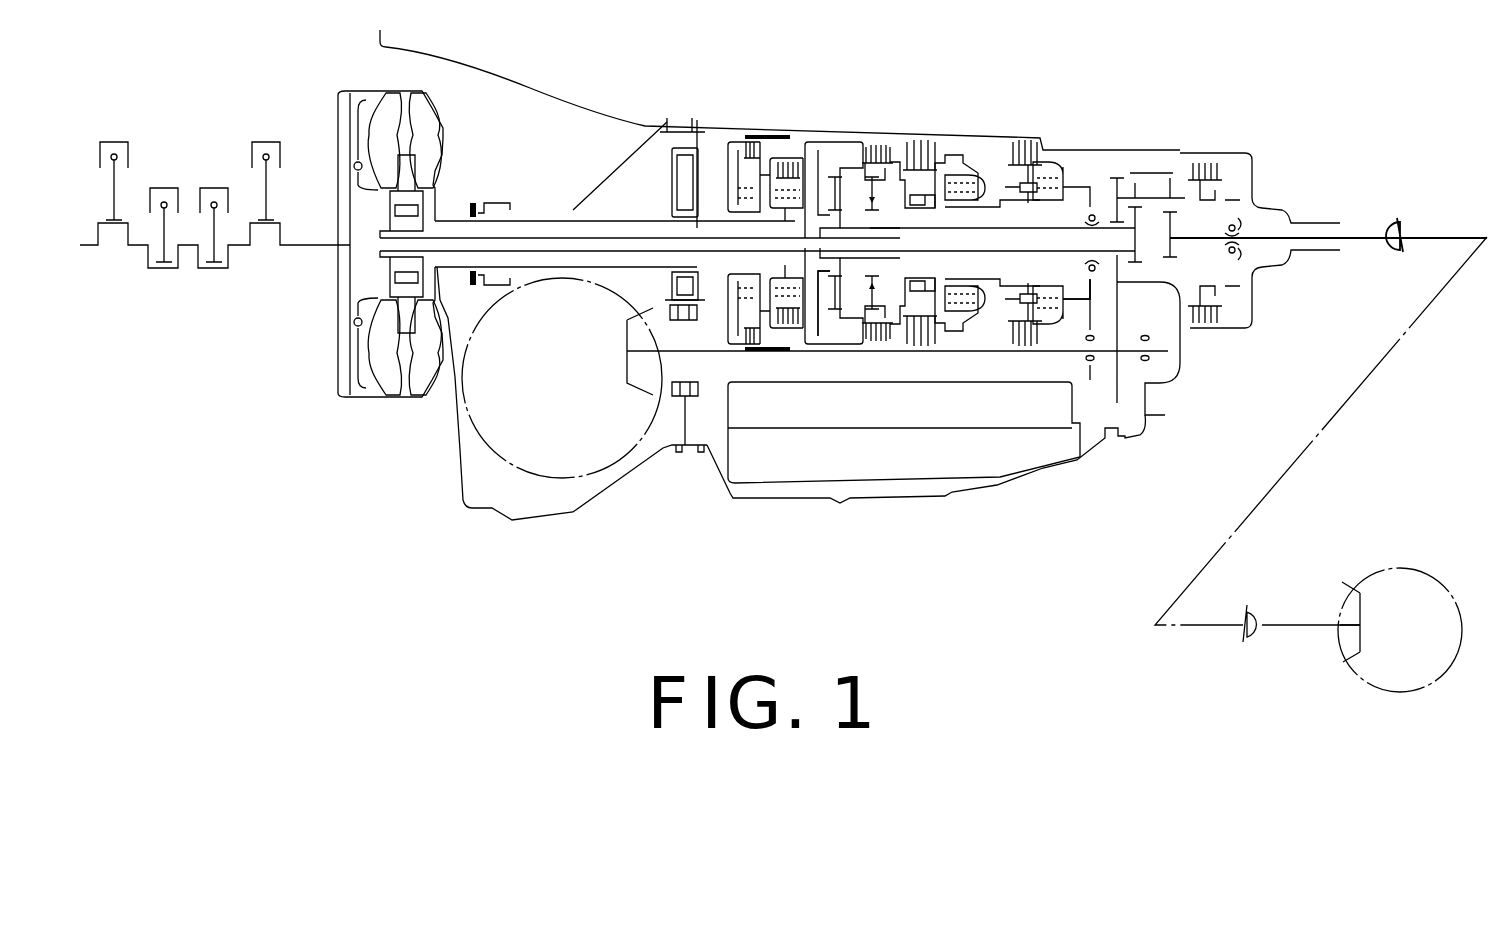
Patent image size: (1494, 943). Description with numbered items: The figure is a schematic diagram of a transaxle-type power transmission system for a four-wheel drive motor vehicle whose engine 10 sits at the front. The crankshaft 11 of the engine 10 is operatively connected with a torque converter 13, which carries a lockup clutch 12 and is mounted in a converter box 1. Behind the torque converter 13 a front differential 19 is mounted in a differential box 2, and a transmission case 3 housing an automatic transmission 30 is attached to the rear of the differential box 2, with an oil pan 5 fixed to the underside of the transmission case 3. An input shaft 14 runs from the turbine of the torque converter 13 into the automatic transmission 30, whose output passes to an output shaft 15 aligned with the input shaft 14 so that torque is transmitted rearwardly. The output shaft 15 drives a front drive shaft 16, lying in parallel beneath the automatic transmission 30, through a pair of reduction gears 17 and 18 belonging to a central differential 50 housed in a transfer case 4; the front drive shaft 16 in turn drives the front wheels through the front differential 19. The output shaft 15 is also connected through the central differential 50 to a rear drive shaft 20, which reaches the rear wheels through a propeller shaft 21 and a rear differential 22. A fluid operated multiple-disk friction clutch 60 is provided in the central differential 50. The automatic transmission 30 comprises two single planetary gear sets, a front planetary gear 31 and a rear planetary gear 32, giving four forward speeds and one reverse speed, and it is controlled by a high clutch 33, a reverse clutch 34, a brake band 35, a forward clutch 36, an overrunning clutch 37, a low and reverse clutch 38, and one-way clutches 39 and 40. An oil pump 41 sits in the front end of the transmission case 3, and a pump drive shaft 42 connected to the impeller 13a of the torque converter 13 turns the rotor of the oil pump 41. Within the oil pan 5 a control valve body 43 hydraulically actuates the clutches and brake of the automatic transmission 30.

The converter box 1 is at (518, 85).
The differential box 2 is at (568, 513).
The transmission case 3 is at (705, 122).
The transfer case 4 is at (1195, 150).
The oil pan 5 is at (1037, 480).
The engine 10 is at (186, 151).
The crankshaft 11 is at (308, 246).
The lockup clutch 12 is at (345, 128).
The torque converter 13 is at (440, 117).
The impeller 13a is at (440, 190).
The input shaft 14 is at (503, 237).
The output shaft 15 is at (1060, 257).
The front drive shaft 16 is at (1000, 353).
The reduction gear 17 is at (1118, 185).
The reduction gear 18 is at (1145, 417).
The front differential 19 is at (612, 465).
The rear drive shaft 20 is at (1360, 237).
The propeller shaft 21 is at (1473, 233).
The rear differential 22 is at (1417, 570).
The automatic transmission 30 is at (984, 108).
The front planetary gear 31 is at (847, 313).
The rear planetary gear 32 is at (873, 195).
The high clutch 33 is at (797, 160).
The reverse clutch 34 is at (770, 148).
The brake band 35 is at (753, 132).
The forward clutch 36 is at (875, 143).
The overrunning clutch 37 is at (940, 140).
The low and reverse clutch 38 is at (1022, 140).
The one-way clutch 39 is at (920, 197).
The one-way clutch 40 is at (1032, 187).
The oil pump 41 is at (682, 190).
The pump drive shaft 42 is at (563, 208).
The control valve body 43 is at (847, 466).
The central differential 50 is at (1150, 170).
The fluid operated multiple-disk friction clutch 60 is at (1231, 165).